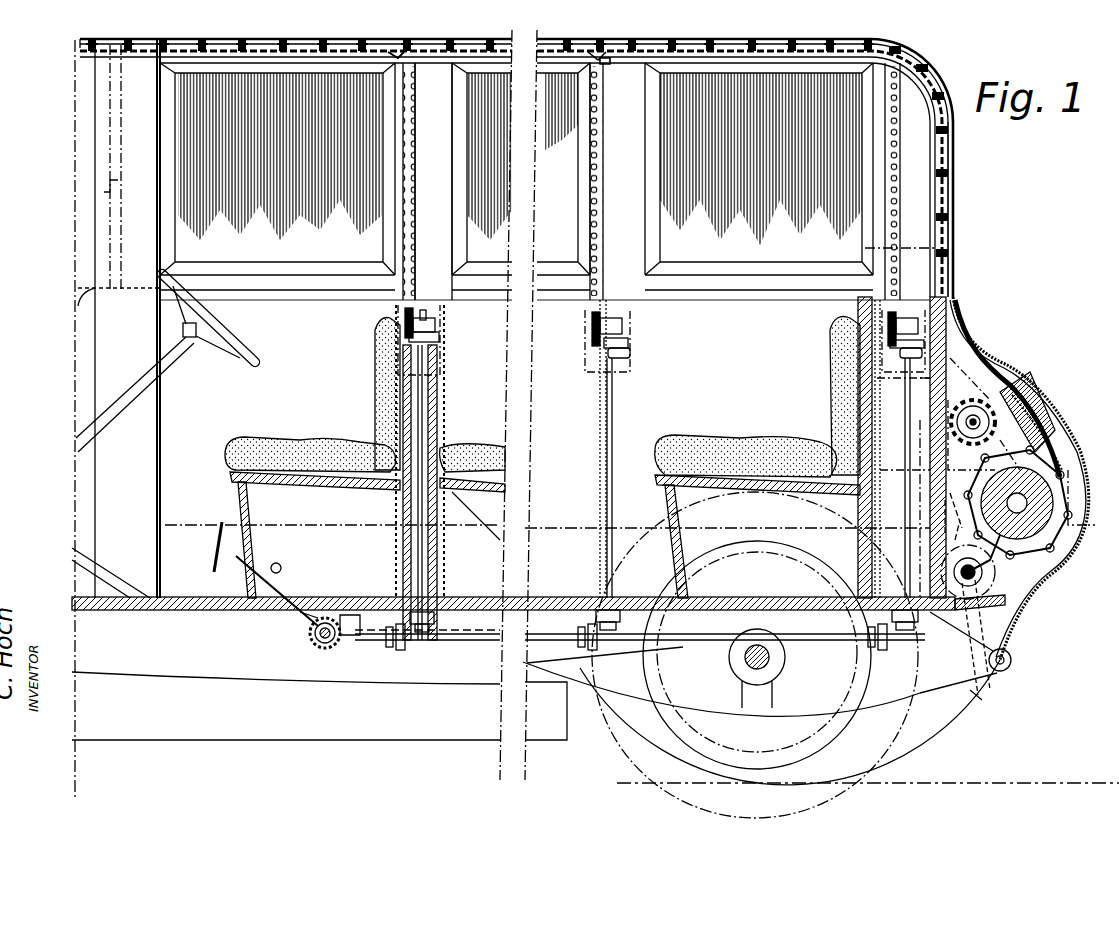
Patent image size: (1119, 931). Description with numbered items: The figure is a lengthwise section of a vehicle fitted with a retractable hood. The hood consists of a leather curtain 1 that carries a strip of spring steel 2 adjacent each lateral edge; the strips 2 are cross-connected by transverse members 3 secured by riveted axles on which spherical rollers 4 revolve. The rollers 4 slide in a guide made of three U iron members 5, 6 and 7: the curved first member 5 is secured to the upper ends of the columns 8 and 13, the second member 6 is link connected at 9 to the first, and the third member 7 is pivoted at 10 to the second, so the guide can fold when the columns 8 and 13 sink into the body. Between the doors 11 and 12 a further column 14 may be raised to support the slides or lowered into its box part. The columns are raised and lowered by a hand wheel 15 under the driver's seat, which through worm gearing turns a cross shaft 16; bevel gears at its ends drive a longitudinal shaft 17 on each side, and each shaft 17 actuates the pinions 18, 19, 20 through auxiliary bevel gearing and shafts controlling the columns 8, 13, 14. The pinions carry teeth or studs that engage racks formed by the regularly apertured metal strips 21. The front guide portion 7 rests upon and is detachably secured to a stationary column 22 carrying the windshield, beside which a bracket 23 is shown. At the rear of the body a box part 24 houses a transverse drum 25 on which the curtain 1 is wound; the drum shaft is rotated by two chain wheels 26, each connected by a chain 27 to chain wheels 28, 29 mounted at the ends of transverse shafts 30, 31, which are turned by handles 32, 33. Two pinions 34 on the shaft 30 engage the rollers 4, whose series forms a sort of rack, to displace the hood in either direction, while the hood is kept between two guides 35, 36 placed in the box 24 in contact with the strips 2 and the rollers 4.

The curtain 1 is at (244, 42).
The strip of spring steel 2 is at (96, 46).
The transverse member 3 is at (132, 48).
The spherical roller 4 is at (352, 48).
The first U iron member 5 is at (650, 62).
The second U iron member 6 is at (466, 60).
The third U iron member 7 is at (172, 58).
The column 8 is at (948, 172).
The link connection 9 is at (598, 54).
The pivot 10 is at (396, 54).
The door 11 is at (555, 297).
The door 12 is at (290, 295).
The column 13 is at (640, 252).
The column 14 is at (435, 250).
The hand wheel 15 is at (216, 556).
The cross shaft 16 is at (308, 645).
The longitudinal shaft 17 is at (494, 638).
The pinion 18 is at (893, 308).
The pinion 19 is at (600, 306).
The pinion 20 is at (410, 302).
The apertured metal strip 21 is at (410, 192).
The stationary column 22 is at (112, 152).
The windshield bracket 23 is at (104, 192).
The box part 24 is at (1050, 440).
The drum 25 is at (1045, 522).
The chain wheel 26 is at (1085, 505).
The chain 27 is at (980, 506).
The chain wheel 28 is at (988, 388).
The chain wheel 29 is at (984, 574).
The transverse shaft 30 is at (945, 413).
The transverse shaft 31 is at (982, 606).
The handle 32 is at (920, 470).
The handle 33 is at (975, 622).
The pinion 34 is at (1005, 400).
The guide 35 is at (1020, 418).
The guide 36 is at (973, 375).